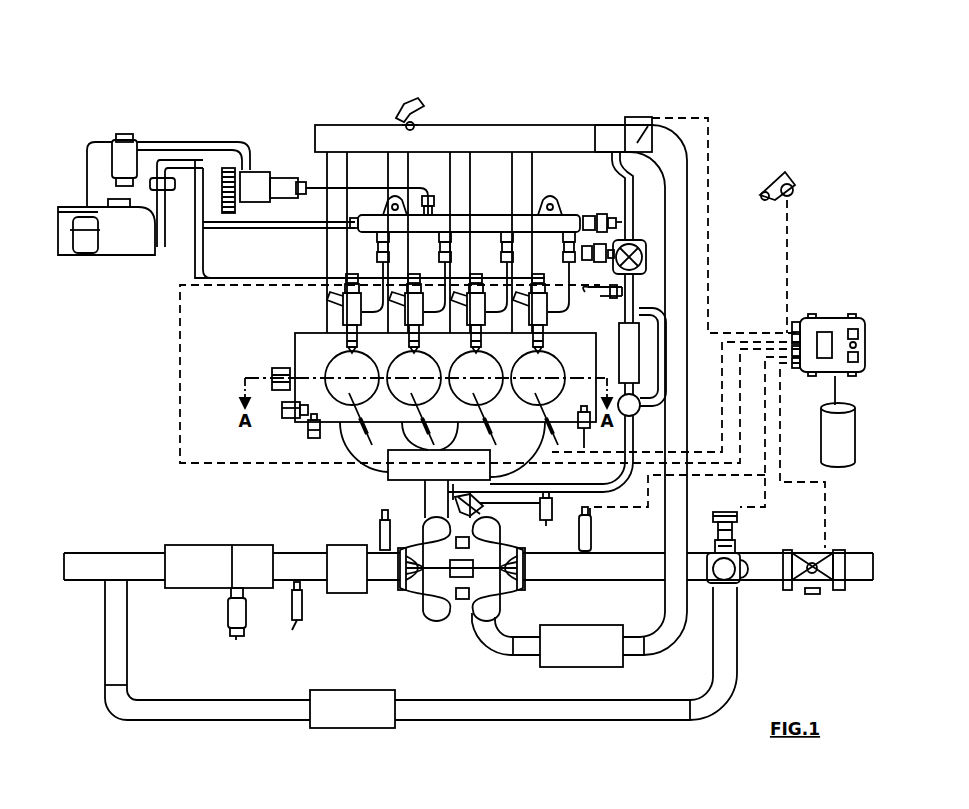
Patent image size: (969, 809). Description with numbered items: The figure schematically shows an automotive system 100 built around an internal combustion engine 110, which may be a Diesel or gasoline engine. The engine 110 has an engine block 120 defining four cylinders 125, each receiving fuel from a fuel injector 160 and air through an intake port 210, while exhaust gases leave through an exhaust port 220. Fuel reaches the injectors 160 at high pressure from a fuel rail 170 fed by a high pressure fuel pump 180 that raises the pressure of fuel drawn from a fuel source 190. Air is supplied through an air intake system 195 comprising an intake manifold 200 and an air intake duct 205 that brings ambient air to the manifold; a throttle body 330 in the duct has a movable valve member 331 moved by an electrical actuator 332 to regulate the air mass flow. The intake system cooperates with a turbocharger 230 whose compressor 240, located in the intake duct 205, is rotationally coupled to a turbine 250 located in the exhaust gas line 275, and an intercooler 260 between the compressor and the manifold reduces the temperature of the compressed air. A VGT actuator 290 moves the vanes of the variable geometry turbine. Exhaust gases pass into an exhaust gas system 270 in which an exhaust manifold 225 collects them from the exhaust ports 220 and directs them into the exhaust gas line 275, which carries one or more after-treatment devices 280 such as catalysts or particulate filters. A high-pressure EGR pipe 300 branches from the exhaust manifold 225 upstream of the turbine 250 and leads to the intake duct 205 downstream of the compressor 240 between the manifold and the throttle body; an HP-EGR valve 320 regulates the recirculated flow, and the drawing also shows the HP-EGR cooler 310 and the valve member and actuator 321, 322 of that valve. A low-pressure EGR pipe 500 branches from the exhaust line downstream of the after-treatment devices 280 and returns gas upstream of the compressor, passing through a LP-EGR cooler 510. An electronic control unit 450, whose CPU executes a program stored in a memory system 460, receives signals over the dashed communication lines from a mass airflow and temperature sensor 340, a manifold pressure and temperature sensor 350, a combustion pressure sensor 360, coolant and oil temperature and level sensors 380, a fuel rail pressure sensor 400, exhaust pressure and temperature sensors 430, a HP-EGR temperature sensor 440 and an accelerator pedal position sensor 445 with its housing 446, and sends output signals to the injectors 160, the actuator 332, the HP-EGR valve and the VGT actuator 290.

The automotive system 100 is at (232, 101).
The internal combustion engine 110 is at (552, 103).
The engine block 120 is at (293, 338).
The cylinder 125 is at (555, 358).
The fuel injector 160 is at (345, 317).
The fuel rail 170 is at (378, 224).
The high pressure fuel pump 180 is at (268, 165).
The fuel source 190 is at (127, 242).
The air intake system 195 is at (518, 80).
The intake manifold 200 is at (463, 140).
The air intake duct 205 is at (633, 572).
The intake port 210 is at (327, 335).
The exhaust port 220 is at (352, 423).
The exhaust manifold 225 is at (413, 472).
The turbocharger 230 is at (426, 647).
The compressor 240 is at (487, 598).
The turbine 250 is at (432, 600).
The intercooler 260 is at (578, 648).
The exhaust gas system 270 is at (199, 532).
The exhaust gas line 275 is at (98, 568).
The exhaust after-treatment device 280 is at (182, 595).
The VGT actuator 290 is at (482, 505).
The HP-EGR pipe 300 is at (612, 505).
The EGR cooler 310 is at (630, 365).
The HP-EGR valve 320 is at (633, 238).
The EGR valve 321 is at (643, 247).
The valve actuator 322 is at (648, 262).
The throttle body 330 is at (641, 141).
The movable valve member 331 is at (652, 120).
The electrical actuator 332 is at (637, 117).
The mass airflow and temperature sensor 340 is at (828, 592).
The manifold pressure and temperature sensor 350 is at (403, 112).
The combustion pressure sensor 360 is at (362, 437).
The coolant and oil temperature and level sensors 380 is at (310, 422).
The fuel rail pressure sensor 400 is at (615, 220).
The exhaust pressure and temperature sensors 430 is at (240, 637).
The HP-EGR temperature sensor 440 is at (630, 293).
The accelerator pedal position sensor 445 is at (789, 178).
The sensor housing 446 is at (775, 182).
The electronic control unit 450 is at (832, 318).
The memory system 460 is at (835, 445).
The LP-EGR pipe 500 is at (222, 710).
The LP-EGR cooler 510 is at (365, 715).